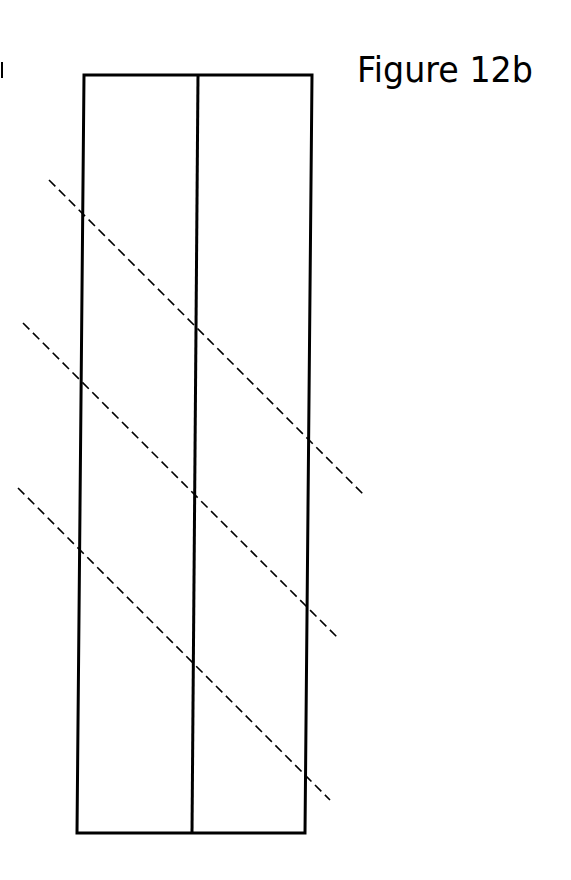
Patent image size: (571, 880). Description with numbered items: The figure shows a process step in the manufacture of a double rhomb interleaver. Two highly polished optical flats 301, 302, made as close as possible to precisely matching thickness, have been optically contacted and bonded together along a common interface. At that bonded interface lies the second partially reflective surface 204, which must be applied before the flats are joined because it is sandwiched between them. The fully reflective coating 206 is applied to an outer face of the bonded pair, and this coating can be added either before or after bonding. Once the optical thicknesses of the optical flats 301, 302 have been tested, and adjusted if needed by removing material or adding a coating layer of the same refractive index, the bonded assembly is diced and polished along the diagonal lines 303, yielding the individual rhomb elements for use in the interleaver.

The fully reflective coating 206 is at (312, 220).
The second partially reflective surface 204 is at (196, 300).
The optical flat 302 is at (262, 156).
The optical flat 301 is at (142, 770).
The dicing lines 303 is at (273, 730).